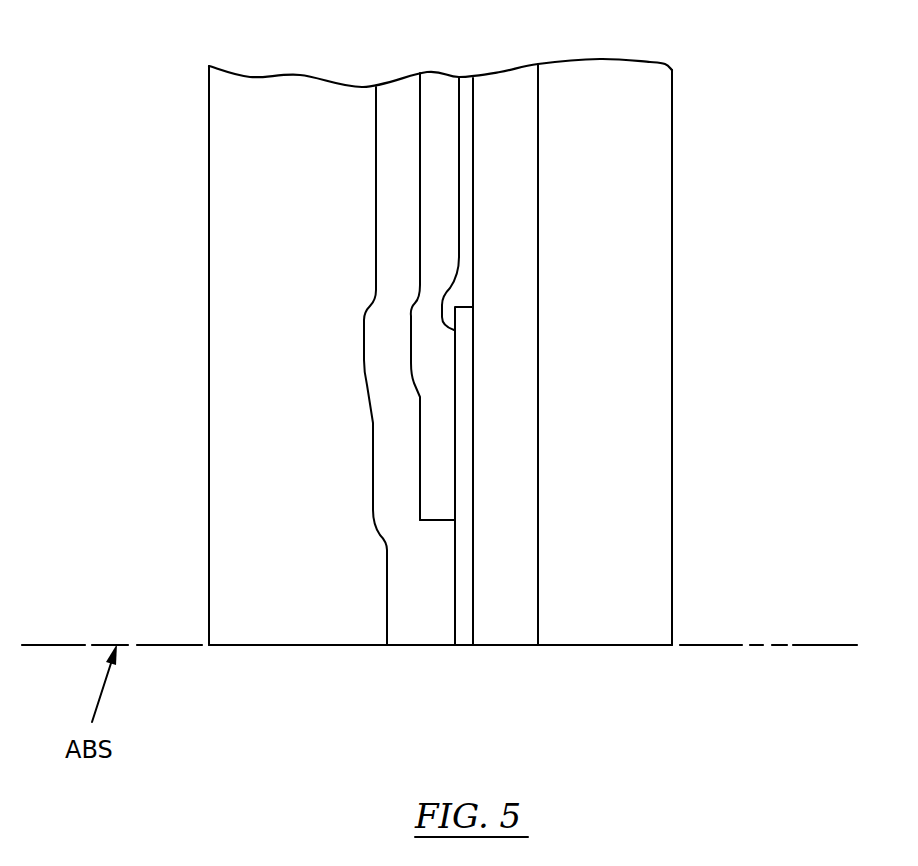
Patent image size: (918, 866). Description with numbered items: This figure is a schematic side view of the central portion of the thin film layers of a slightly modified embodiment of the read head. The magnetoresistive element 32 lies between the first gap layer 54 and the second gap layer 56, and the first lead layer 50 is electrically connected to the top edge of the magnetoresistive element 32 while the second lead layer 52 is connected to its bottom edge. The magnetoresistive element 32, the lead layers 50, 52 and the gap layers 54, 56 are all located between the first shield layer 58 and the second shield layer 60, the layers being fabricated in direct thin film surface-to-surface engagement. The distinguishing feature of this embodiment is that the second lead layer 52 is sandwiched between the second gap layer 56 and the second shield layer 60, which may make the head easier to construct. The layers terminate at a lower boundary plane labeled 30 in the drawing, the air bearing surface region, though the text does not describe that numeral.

The substrate / air bearing surface plane 30 is at (755, 646).
The magnetoresistive element 32 is at (472, 613).
The first sense current thin film lead layer 50 is at (463, 287).
The second sense current thin film lead layer 52 is at (420, 625).
The first thin film gap layer 54 is at (505, 433).
The second thin film gap layer 56 is at (445, 95).
The first thin film shield layer 58 is at (620, 210).
The second thin film shield layer 60 is at (258, 182).